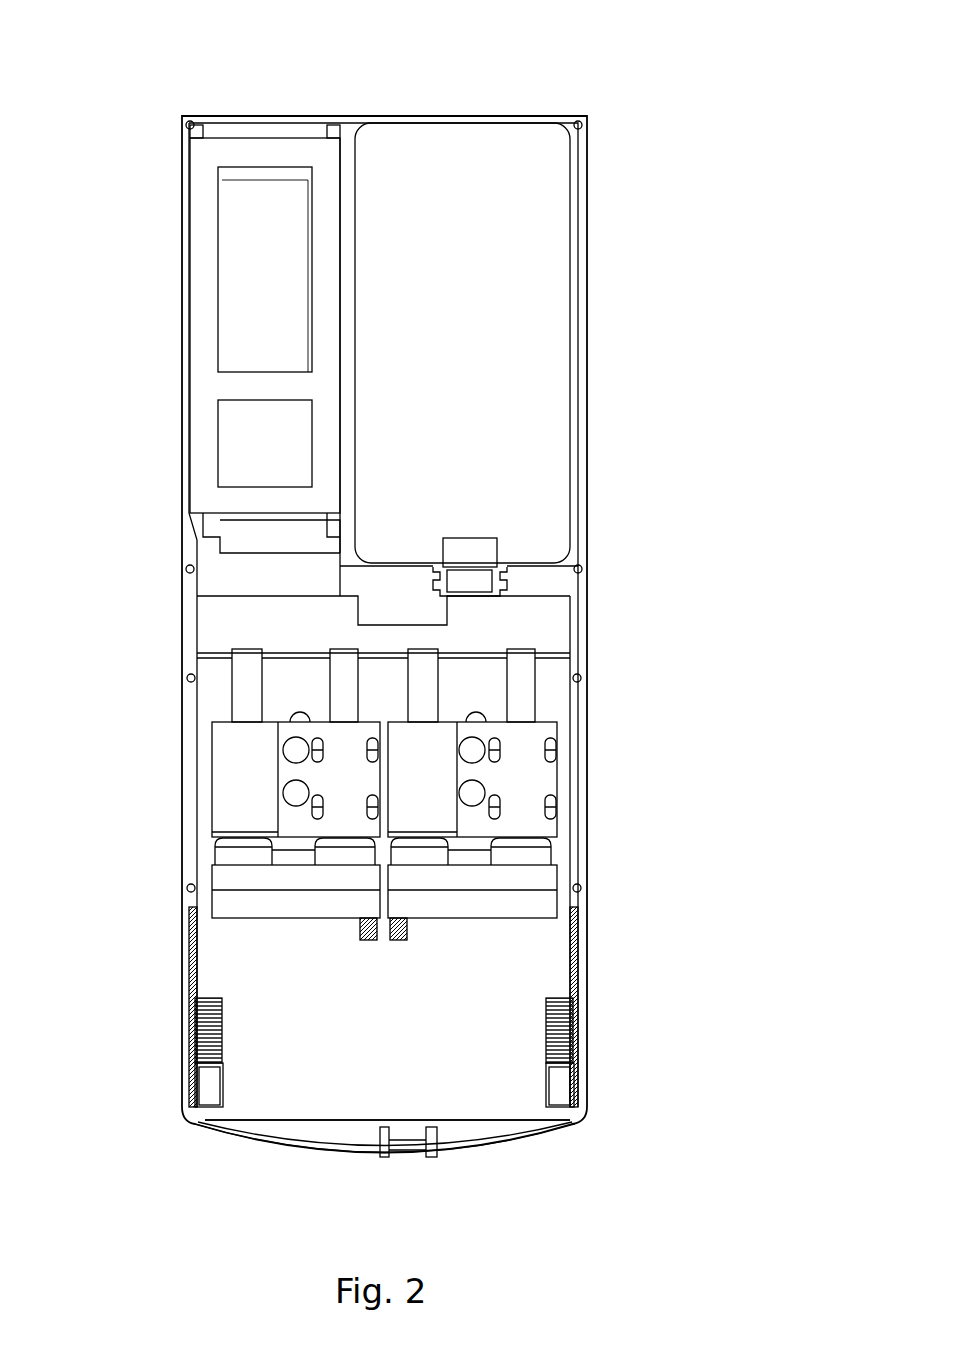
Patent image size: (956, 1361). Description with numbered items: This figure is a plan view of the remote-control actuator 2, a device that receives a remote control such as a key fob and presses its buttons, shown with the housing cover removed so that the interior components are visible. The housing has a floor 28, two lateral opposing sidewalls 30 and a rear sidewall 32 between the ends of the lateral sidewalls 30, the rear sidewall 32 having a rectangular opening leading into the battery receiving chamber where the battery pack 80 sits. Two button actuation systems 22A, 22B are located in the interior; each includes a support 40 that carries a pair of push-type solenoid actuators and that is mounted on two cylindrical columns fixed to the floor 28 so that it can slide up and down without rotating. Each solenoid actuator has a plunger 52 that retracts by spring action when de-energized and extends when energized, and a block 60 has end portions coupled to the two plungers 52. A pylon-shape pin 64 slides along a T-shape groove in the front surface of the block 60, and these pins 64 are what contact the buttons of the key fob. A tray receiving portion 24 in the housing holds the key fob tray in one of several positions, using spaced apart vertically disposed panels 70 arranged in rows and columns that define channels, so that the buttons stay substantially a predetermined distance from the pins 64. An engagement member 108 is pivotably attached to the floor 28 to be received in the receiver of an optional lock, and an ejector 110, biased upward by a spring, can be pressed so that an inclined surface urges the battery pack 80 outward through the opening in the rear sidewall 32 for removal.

The remote-control actuator 2 is at (523, 50).
The tray receiving portion 24 is at (530, 1063).
The floor 28 is at (403, 1078).
The lateral sidewalls 30 is at (181, 536).
The rear sidewall 32 is at (377, 117).
The support 40 is at (297, 728).
The plunger 52 is at (528, 692).
The button actuation system 22A is at (217, 738).
The button actuation system 22B is at (535, 788).
The block 60 is at (218, 897).
The pylon-shape pin 64 is at (364, 940).
The panels 70 is at (207, 998).
The battery pack 80 is at (557, 230).
The engagement member 108 is at (382, 1157).
The ejector 110 is at (457, 531).